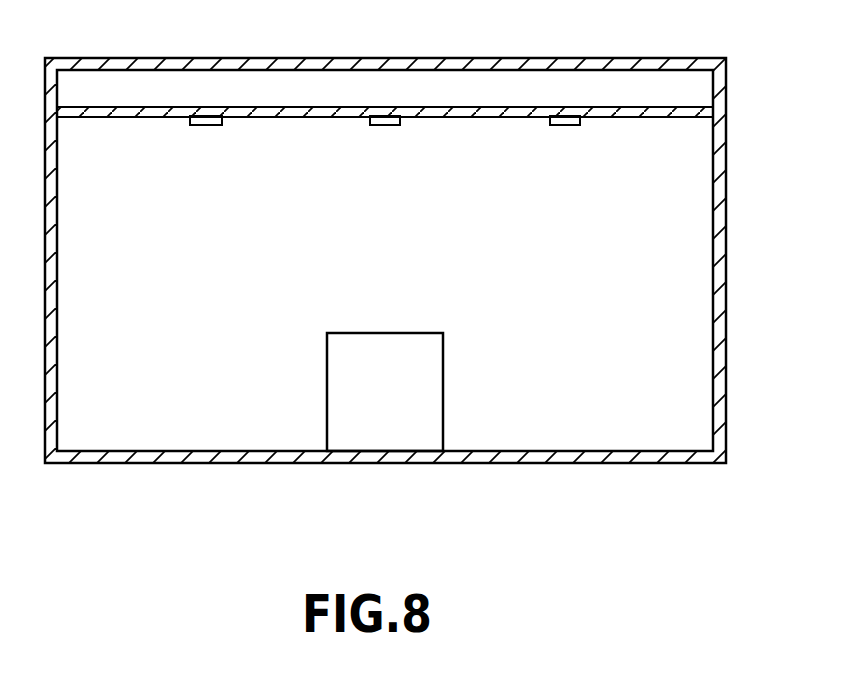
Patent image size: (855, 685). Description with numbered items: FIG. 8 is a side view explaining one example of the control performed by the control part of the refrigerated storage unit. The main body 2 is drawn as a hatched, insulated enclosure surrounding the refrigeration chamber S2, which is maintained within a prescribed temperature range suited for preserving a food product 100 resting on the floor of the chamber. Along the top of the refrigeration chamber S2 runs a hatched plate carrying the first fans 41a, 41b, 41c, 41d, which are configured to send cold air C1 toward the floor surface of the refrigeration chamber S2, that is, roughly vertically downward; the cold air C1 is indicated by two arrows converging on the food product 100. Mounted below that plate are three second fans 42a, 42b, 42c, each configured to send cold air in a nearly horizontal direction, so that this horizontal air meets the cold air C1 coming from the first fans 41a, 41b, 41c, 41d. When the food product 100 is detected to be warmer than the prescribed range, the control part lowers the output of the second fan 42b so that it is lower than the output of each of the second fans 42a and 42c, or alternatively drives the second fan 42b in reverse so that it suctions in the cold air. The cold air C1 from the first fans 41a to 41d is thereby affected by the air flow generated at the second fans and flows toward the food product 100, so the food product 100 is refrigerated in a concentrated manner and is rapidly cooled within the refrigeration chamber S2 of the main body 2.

The main body 2 is at (727, 272).
The first fan 41a is at (343, 323).
The first fan 41b is at (429, 323).
The first fan 41c is at (343, 323).
The first fan 41d is at (429, 323).
The second fan 42a is at (210, 115).
The second fan 42b is at (385, 125).
The second fan 42c is at (566, 117).
The food product 100 is at (372, 425).
The refrigeration chamber S2 is at (587, 425).
The cold air C1 is at (322, 225).